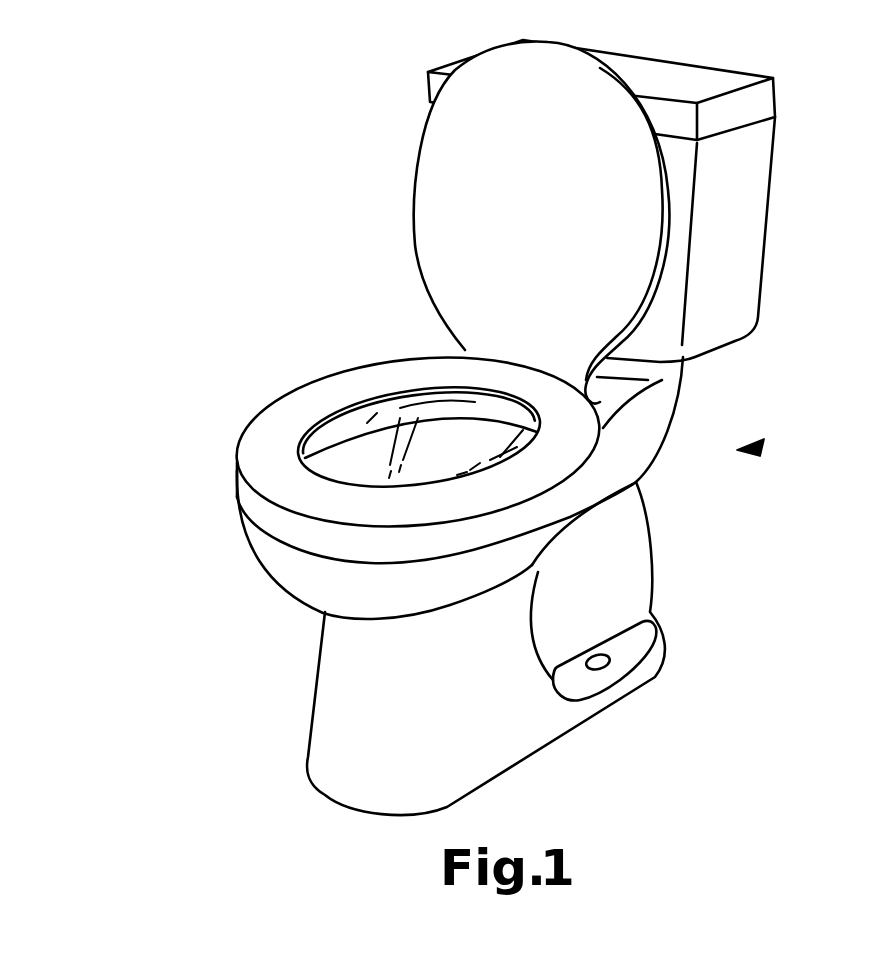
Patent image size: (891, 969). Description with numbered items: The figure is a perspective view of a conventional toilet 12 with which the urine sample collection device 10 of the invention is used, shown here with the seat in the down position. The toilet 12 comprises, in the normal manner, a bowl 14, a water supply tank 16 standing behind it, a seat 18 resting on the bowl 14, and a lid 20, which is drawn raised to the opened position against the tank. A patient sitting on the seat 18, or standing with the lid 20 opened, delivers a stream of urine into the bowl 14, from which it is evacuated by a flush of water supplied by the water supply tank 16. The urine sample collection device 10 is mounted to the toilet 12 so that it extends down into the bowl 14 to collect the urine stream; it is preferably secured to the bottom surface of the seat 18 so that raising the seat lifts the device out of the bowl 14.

The urine sample collection device 10 is at (357, 450).
The toilet 12 is at (762, 447).
The bowl 14 is at (295, 582).
The water supply tank 16 is at (743, 230).
The seat 18 is at (255, 452).
The lid 20 is at (548, 211).